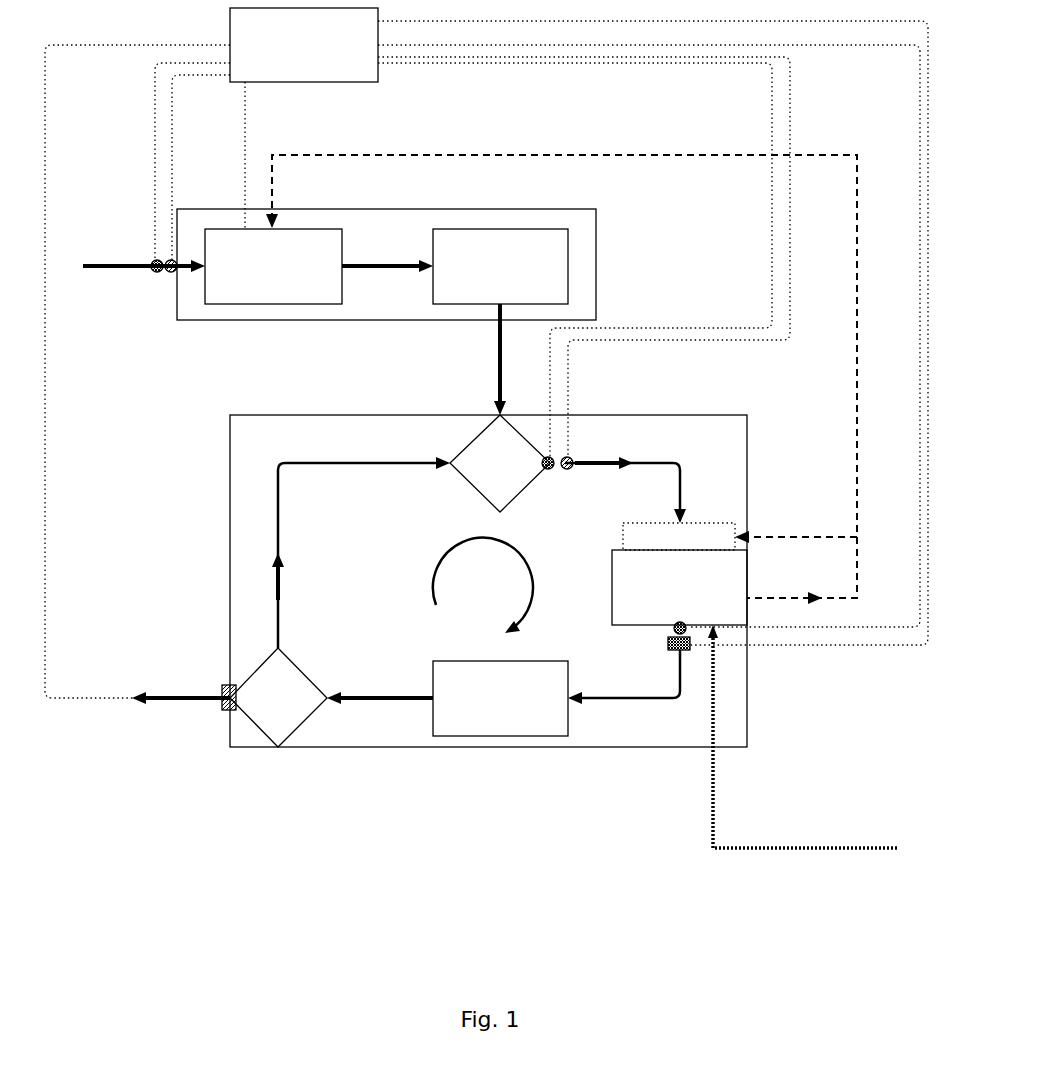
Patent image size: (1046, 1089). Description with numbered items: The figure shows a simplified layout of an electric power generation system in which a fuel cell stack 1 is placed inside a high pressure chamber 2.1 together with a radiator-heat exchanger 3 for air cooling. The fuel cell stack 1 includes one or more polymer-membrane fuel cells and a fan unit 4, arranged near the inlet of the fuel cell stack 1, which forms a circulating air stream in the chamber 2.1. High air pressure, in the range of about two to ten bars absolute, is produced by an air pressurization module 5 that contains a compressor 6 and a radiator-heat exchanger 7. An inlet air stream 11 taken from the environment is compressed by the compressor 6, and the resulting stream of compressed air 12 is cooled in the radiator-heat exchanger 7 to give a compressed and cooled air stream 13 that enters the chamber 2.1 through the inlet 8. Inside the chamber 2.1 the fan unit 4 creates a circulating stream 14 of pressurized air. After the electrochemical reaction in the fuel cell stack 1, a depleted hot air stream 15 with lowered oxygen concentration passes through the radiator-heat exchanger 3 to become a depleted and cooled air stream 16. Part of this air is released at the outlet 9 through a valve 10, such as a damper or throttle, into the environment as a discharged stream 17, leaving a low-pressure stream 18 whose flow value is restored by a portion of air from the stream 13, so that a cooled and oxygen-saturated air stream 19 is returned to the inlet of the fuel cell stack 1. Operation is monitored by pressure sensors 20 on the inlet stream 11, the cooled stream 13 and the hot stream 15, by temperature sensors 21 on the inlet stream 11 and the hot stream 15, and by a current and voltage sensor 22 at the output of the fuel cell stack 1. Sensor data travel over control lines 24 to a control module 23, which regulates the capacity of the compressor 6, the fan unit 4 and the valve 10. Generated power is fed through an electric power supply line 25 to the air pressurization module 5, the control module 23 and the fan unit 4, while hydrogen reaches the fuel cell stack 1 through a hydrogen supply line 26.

The fuel cell stack 1 is at (722, 598).
The high pressure chamber 2.1 is at (747, 722).
The radiator-heat exchanger 3 is at (496, 722).
The fan unit 4 is at (722, 537).
The air pressurization module 5 is at (598, 290).
The compressor 6 is at (315, 255).
The radiator-heat exchanger 7 is at (545, 268).
The inlet 8 is at (513, 440).
The outlet 9 is at (255, 712).
The valve 10 is at (222, 705).
The inlet air stream 11 is at (144, 255).
The stream of compressed air 12 is at (387, 255).
The compressed and cooled air stream 13 is at (485, 359).
The circulating stream 14 is at (483, 585).
The depleted hot air stream 15 is at (624, 677).
The depleted and cooled air stream 16 is at (380, 687).
The discharged stream 17 is at (181, 687).
The low-pressure stream 18 is at (348, 552).
The cooled and oxygen-saturated air stream 19 is at (625, 480).
The pressure sensors 20 is at (155, 270).
The temperature sensors 21 is at (168, 272).
The current and voltage sensor 22 is at (690, 645).
The control module 23 is at (303, 55).
The control lines 24 is at (900, 628).
The electric power supply line 25 is at (860, 572).
The hydrogen supply line 26 is at (850, 848).